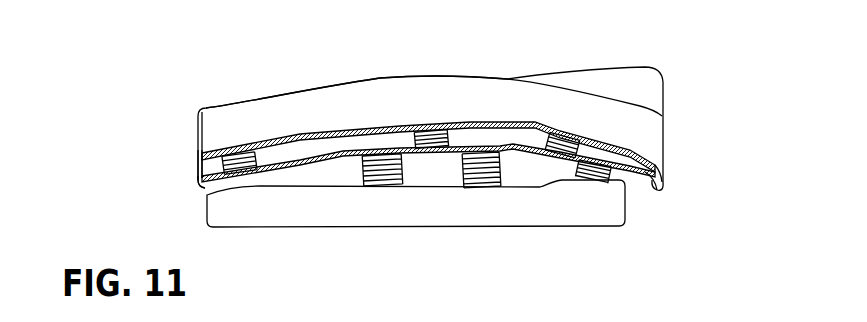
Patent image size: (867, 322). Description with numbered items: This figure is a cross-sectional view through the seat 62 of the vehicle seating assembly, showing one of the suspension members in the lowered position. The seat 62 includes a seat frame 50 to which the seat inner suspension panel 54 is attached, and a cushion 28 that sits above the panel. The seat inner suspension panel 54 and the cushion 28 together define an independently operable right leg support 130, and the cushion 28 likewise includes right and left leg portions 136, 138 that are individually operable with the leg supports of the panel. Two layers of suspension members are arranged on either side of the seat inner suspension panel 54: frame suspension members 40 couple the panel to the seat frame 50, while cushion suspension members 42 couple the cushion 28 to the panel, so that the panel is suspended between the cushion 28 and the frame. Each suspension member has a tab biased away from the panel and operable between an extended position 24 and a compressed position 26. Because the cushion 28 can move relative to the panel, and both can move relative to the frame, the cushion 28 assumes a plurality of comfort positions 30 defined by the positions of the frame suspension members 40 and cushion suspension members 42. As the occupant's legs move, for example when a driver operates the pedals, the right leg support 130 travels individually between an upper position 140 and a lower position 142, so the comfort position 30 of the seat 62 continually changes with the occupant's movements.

The cushion 28 is at (256, 113).
The comfort positions 30 is at (543, 57).
The left leg portion 138 is at (627, 83).
The right leg portion 136 is at (640, 132).
The upper position 140 is at (670, 91).
The lower position 142 is at (683, 173).
The right leg support 130 is at (653, 190).
The compressed position 26 is at (538, 141).
The frame suspension members 40 is at (354, 171).
The cushion suspension members 42 is at (411, 141).
The extended position 24 is at (404, 170).
The seat frame 50 is at (560, 215).
The seat inner suspension panel 54 is at (205, 188).
The seat 62 is at (166, 149).